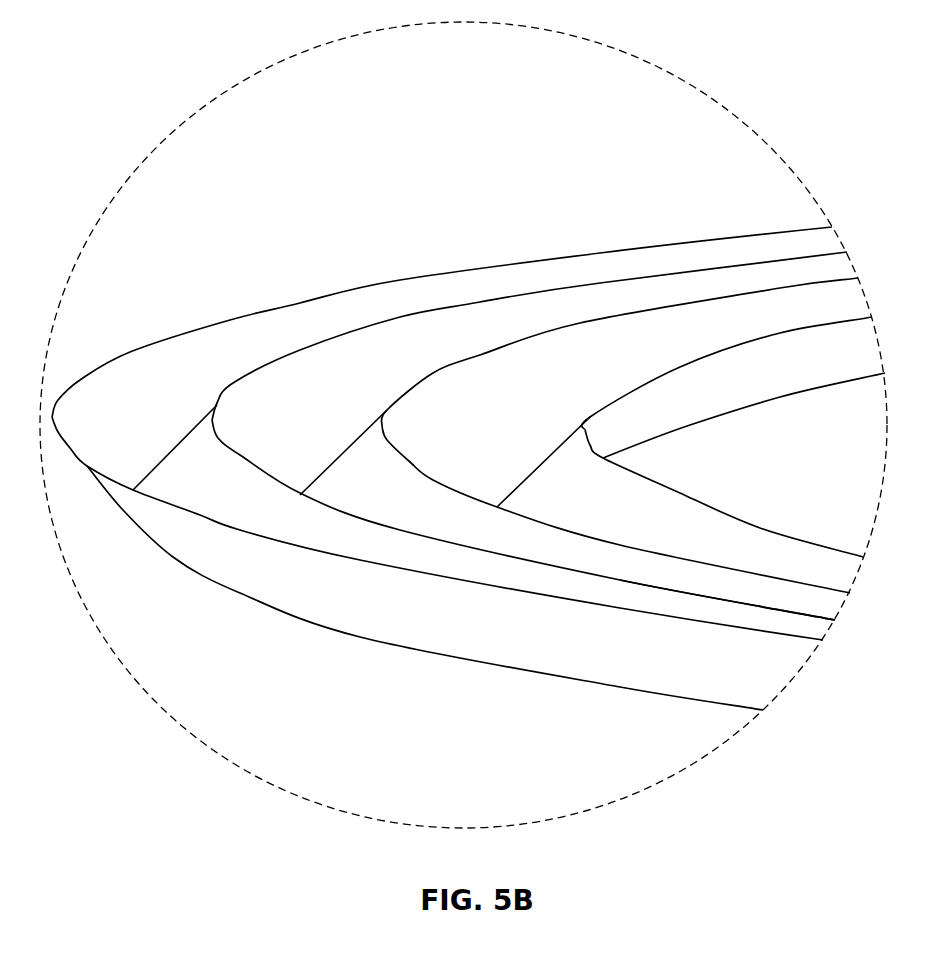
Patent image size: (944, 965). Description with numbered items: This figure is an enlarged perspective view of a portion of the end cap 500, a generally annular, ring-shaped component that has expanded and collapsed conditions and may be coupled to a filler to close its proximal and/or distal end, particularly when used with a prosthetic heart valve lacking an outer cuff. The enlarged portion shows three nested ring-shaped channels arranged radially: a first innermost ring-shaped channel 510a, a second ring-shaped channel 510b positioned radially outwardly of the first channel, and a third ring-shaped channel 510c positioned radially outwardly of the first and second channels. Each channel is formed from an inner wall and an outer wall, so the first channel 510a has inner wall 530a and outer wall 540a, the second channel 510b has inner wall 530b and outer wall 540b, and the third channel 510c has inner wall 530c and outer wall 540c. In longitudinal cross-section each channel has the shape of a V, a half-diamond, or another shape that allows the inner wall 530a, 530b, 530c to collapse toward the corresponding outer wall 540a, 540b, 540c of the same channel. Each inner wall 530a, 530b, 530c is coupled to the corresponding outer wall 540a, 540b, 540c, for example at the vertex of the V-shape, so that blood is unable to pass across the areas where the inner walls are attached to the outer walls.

The end cap 500 is at (697, 133).
The first innermost ring-shaped channel 510a is at (767, 553).
The second ring-shaped channel 510b is at (800, 602).
The third ring-shaped channel 510c is at (807, 628).
The inner wall 530a is at (570, 470).
The inner wall 530b is at (370, 477).
The inner wall 530c is at (200, 473).
The outer wall 540a is at (578, 380).
The outer wall 540b is at (348, 393).
The outer wall 540c is at (170, 380).